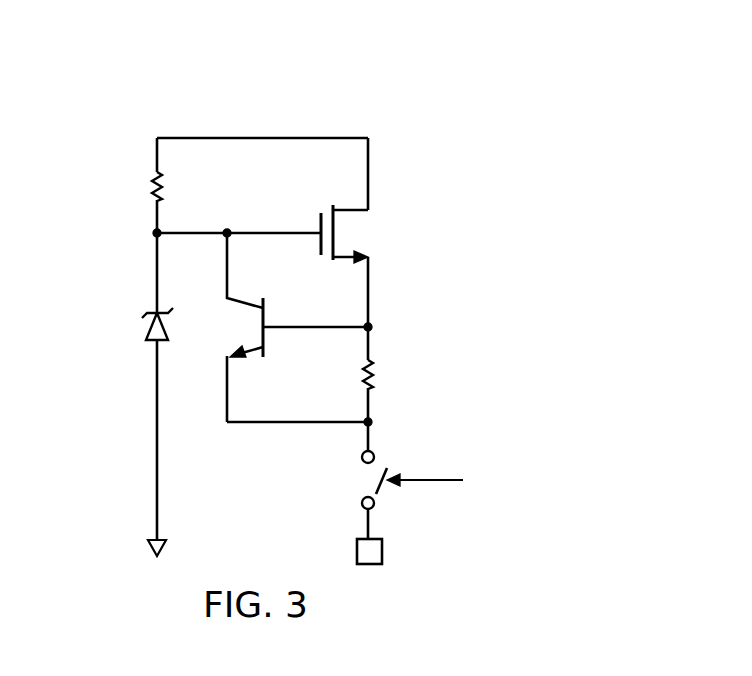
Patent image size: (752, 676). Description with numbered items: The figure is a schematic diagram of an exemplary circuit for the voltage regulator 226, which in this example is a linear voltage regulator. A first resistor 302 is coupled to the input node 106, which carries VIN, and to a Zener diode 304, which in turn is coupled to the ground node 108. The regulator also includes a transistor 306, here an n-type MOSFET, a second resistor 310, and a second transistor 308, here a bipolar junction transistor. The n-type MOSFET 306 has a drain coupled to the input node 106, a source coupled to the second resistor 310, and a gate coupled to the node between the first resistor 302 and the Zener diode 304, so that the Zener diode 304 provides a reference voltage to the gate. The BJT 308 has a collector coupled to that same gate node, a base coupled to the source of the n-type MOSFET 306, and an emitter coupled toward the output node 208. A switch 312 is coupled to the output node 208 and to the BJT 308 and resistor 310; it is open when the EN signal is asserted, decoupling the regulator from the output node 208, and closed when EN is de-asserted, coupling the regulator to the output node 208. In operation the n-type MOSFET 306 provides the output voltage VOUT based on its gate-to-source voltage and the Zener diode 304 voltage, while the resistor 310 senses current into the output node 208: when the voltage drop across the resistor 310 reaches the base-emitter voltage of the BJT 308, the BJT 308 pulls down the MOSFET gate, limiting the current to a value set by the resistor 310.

The voltage regulator 226 is at (312, 95).
The input node 106 is at (216, 136).
The first resistor 302 is at (153, 185).
The Zener diode 304 is at (146, 321).
The ground node 108 is at (149, 548).
The transistor (n-type MOSFET) 306 is at (318, 222).
The second transistor (bipolar junction transistor) 308 is at (268, 318).
The second resistor 310 is at (378, 378).
The switch 312 is at (378, 498).
The output node 208 is at (366, 523).